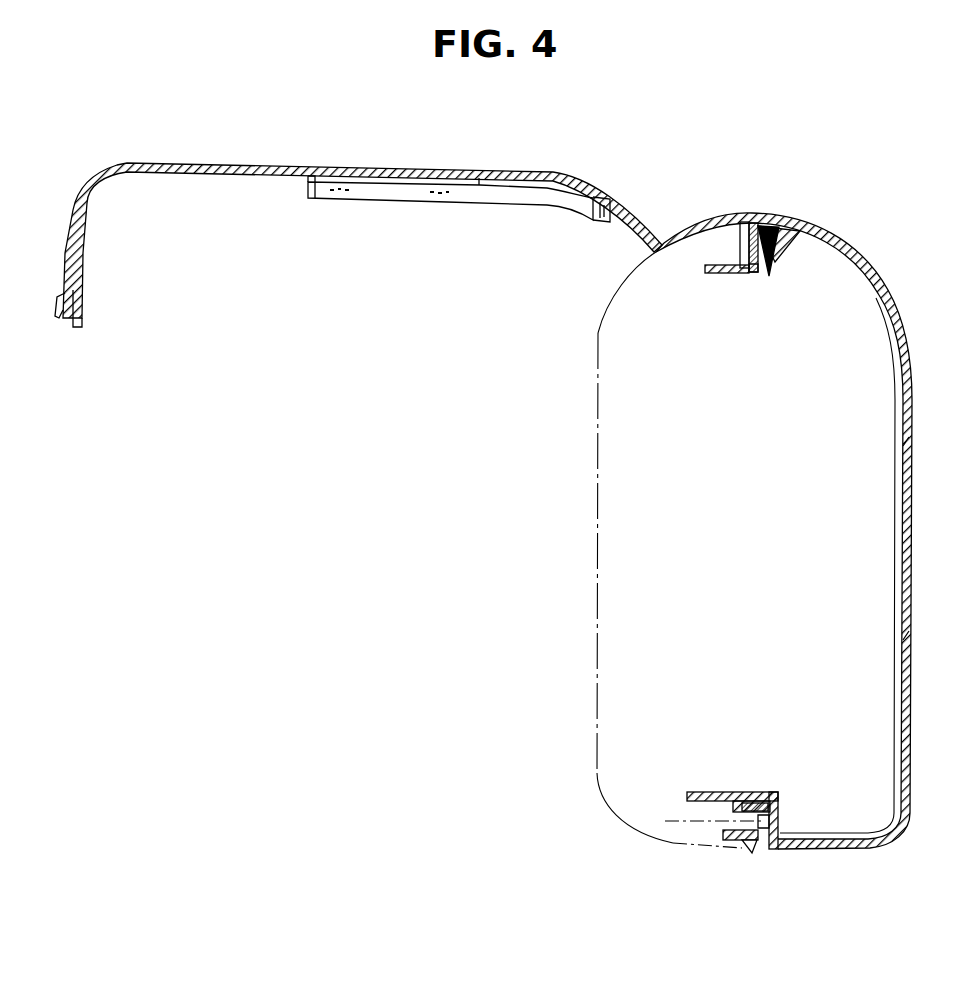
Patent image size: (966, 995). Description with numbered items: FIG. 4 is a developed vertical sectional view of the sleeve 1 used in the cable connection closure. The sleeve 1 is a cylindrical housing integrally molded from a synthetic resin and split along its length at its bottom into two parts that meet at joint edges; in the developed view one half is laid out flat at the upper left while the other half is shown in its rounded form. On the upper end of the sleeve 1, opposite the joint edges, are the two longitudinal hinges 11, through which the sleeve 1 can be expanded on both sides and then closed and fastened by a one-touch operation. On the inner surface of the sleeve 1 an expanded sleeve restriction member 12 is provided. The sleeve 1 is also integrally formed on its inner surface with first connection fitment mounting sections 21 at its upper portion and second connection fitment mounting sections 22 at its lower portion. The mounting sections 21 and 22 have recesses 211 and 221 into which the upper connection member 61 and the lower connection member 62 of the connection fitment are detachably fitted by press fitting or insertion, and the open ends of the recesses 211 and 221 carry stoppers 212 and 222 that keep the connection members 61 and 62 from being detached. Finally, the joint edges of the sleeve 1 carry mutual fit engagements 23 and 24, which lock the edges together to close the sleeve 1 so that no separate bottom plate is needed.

The sleeve 1 is at (358, 142).
The hinge 11 is at (664, 243).
The expanded sleeve restriction member 12 is at (413, 196).
The first connection fitment mounting section 21 is at (723, 274).
The recess 211 is at (746, 224).
The stopper 212 is at (757, 274).
The upper connection member 61 is at (780, 227).
The second connection fitment mounting section 22 is at (703, 792).
The recess 221 is at (778, 798).
The stopper 222 is at (728, 797).
The lower connection member 62 is at (754, 797).
The mutual fit engagement 23 is at (747, 853).
The mutual fit engagement 24 is at (742, 840).